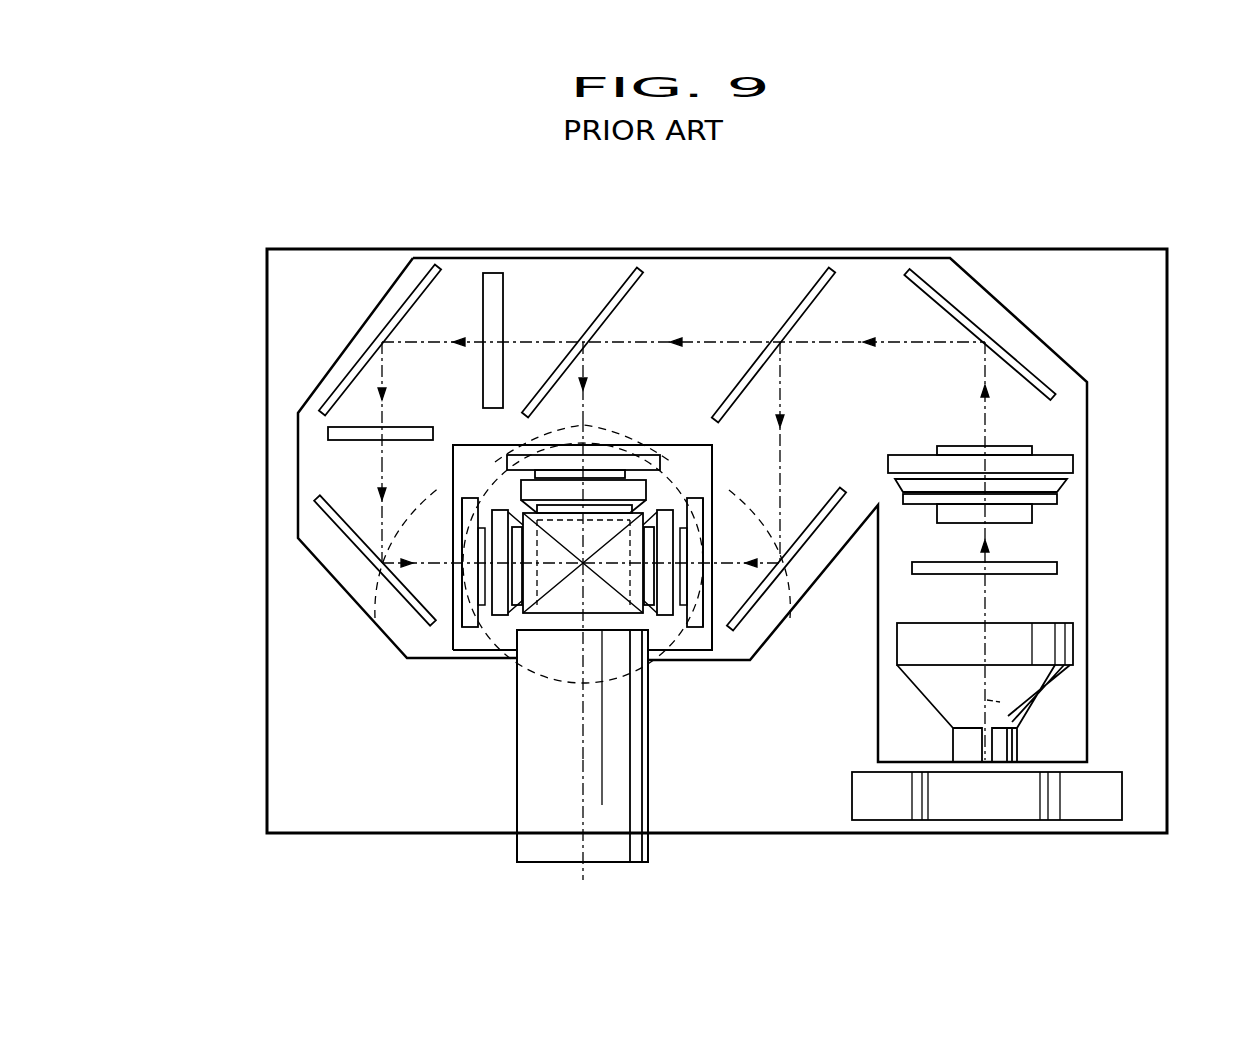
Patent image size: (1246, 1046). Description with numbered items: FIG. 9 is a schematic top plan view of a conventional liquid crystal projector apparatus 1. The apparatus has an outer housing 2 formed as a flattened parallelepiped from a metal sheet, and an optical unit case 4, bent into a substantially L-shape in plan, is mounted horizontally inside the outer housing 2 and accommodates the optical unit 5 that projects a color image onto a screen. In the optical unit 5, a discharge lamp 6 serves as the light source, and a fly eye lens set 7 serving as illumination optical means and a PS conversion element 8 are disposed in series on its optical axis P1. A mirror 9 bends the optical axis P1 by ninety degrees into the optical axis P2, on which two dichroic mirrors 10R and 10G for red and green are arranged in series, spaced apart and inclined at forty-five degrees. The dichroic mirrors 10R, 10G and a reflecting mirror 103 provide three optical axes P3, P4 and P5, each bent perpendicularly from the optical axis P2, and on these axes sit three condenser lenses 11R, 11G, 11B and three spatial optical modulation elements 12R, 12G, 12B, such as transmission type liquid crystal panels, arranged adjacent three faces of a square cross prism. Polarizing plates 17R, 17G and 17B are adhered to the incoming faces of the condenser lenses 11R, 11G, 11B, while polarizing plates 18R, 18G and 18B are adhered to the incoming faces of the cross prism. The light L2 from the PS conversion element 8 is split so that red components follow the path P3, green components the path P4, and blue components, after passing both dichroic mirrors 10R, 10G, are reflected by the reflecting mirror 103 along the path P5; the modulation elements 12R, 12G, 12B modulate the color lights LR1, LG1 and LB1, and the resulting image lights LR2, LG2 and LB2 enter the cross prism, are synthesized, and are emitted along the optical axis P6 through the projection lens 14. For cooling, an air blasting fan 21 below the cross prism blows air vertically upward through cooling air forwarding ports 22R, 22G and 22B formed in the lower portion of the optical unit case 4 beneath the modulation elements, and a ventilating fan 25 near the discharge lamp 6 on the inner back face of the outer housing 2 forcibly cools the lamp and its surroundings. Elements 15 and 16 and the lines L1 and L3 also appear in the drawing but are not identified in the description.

The liquid crystal projector apparatus 1 is at (244, 240).
The outer housing 2 is at (256, 306).
The optical unit case 4 is at (348, 332).
The optical unit 5 is at (532, 298).
The discharge lamp 6 is at (1075, 640).
The fly eye lens set 7 is at (1057, 568).
The PS conversion element 8 is at (1060, 480).
The mirror 9 is at (1033, 368).
The dichroic mirror for G 10G is at (617, 303).
The dichroic mirror for R 10R is at (808, 293).
The condenser lens 11B is at (466, 498).
The condenser lens 11G is at (643, 478).
The condenser lens 11R is at (700, 503).
The spatial optical modulation element 12B is at (494, 522).
The spatial optical modulation element 12G is at (656, 487).
The spatial optical modulation element 12R is at (672, 628).
The projection lens 14 is at (533, 848).
The reflecting mirror 15 is at (840, 490).
The reflecting mirror 16 is at (350, 540).
The polarizing plate 17B is at (480, 606).
The polarizing plate 17G is at (530, 458).
The polarizing plate 17R is at (700, 605).
The polarizing plate 18B is at (518, 605).
The polarizing plate 18G is at (512, 470).
The polarizing plate 18R is at (652, 605).
The air blasting fan 21 is at (640, 688).
The cooling air forwarding port 22B is at (466, 630).
The cooling air forwarding port 22G is at (590, 455).
The cooling air forwarding port 22R is at (705, 640).
The ventilating fan 25 is at (908, 815).
The reflecting mirror 103 is at (398, 262).
The optical axis L1 is at (987, 595).
The light having adjusted polarization direction L2 is at (895, 340).
The optical axis L3 is at (585, 805).
The color light LB1 is at (382, 383).
The image light LB2 is at (430, 610).
The color light LG1 is at (586, 382).
The image light LG2 is at (554, 661).
The color light LR1 is at (784, 382).
The image light LR2 is at (650, 560).
The optical axis P1 is at (990, 700).
The optical axis P2 is at (696, 340).
The optical axis P3 is at (790, 445).
The optical axis P4 is at (588, 430).
The optical axis P5 is at (382, 462).
The optical axis P6 is at (583, 772).